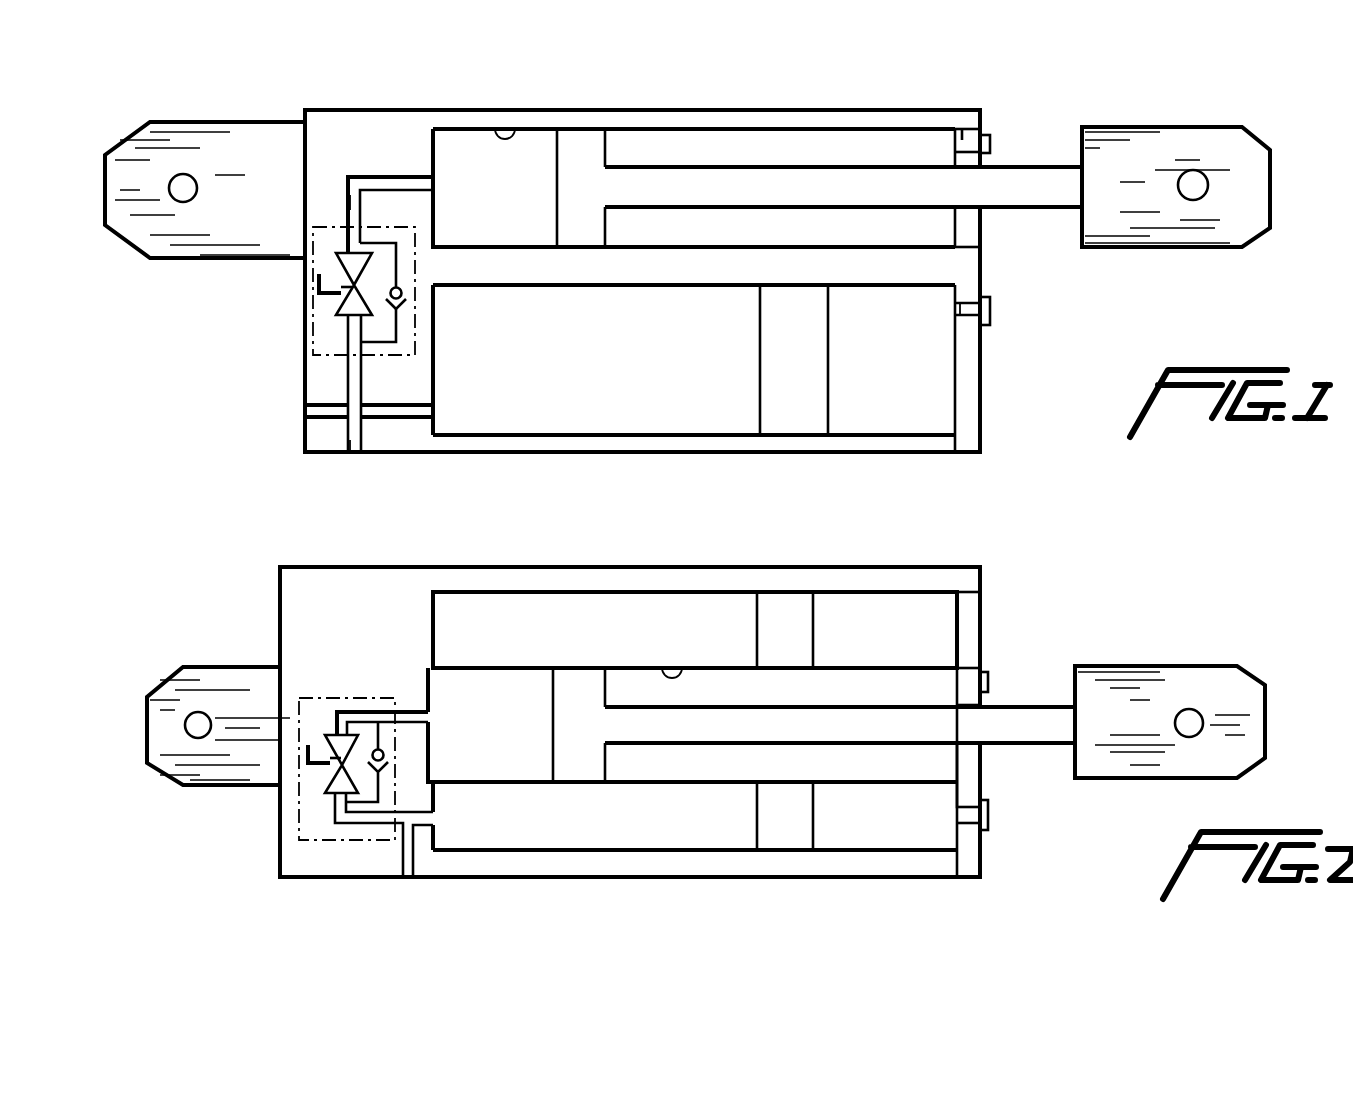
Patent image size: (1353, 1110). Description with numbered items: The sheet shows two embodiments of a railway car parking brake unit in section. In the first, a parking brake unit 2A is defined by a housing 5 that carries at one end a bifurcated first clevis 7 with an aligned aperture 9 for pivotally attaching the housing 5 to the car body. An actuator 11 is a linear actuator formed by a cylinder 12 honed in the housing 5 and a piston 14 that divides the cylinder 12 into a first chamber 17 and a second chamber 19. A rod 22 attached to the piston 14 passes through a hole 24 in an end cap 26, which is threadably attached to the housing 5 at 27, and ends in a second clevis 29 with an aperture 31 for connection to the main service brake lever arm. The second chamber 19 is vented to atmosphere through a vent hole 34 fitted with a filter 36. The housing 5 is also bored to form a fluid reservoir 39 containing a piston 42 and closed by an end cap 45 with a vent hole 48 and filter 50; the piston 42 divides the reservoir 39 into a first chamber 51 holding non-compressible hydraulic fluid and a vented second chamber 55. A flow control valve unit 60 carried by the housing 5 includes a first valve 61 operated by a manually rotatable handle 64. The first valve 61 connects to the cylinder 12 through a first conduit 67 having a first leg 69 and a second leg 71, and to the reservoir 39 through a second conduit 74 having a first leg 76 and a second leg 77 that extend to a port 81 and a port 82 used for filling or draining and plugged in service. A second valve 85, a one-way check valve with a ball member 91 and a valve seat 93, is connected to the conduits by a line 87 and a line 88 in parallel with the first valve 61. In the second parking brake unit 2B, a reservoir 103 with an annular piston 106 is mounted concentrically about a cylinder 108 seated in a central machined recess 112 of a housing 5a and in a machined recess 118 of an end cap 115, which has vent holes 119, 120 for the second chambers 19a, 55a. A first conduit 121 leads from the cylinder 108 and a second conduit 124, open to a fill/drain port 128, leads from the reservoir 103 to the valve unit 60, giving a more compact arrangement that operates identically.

In FIG. 1, the parking brake unit 2A is at (1020, 98).
In FIG. 2, the parking brake unit 2B is at (1002, 557).
In FIG. 1, the housing 5 is at (402, 110).
In FIG. 2, the housing 5a is at (377, 562).
In FIG. 1, the first clevis 7 is at (123, 232).
In FIG. 1, the aligned aperture 9 is at (183, 198).
In FIG. 1, the actuator 11 is at (728, 127).
In FIG. 1, the cylinder 12 is at (505, 128).
In FIG. 1, the piston 14 is at (603, 135).
In FIG. 1, the first chamber 17 is at (694, 188).
In FIG. 1, the second chamber 19 is at (810, 225).
In FIG. 1, the rod 22 is at (850, 175).
In FIG. 2, the rod 22 is at (667, 732).
In FIG. 1, the hole 24 is at (990, 162).
In FIG. 1, the end cap 26 is at (972, 222).
In FIG. 1, the threaded attachment 27 is at (985, 130).
In FIG. 1, the second clevis 29 is at (1250, 232).
In FIG. 1, the aperture 31 is at (1197, 178).
In FIG. 1, the vent hole 34 is at (957, 140).
In FIG. 1, the filter 36 is at (990, 140).
In FIG. 1, the fluid reservoir 39 is at (604, 432).
In FIG. 1, the piston 42 is at (777, 362).
In FIG. 1, the end cap 45 is at (972, 425).
In FIG. 1, the vent hole 48 is at (963, 313).
In FIG. 1, the filter 50 is at (990, 305).
In FIG. 1, the first chamber 51 is at (565, 348).
In FIG. 1, the second chamber 55 is at (898, 352).
In FIG. 1, the flow control valve unit 60 is at (303, 335).
In FIG. 2, the flow control valve unit 60 is at (295, 822).
In FIG. 1, the first valve 61 is at (342, 311).
In FIG. 1, the manually rotatable handle 64 is at (330, 270).
In FIG. 1, the first conduit 67 is at (348, 175).
In FIG. 1, the first leg 69 is at (352, 202).
In FIG. 1, the second leg 71 is at (375, 183).
In FIG. 1, the second conduit 74 is at (345, 395).
In FIG. 1, the first leg 76 is at (362, 375).
In FIG. 1, the second leg 77 is at (395, 414).
In FIG. 1, the port 81 is at (353, 452).
In FIG. 1, the port 82 is at (303, 407).
In FIG. 1, the second valve 85 is at (408, 290).
In FIG. 1, the line 87 is at (380, 243).
In FIG. 1, the line 88 is at (400, 330).
In FIG. 1, the ball member 91 is at (403, 288).
In FIG. 1, the valve seat 93 is at (405, 300).
In FIG. 2, the reservoir 103 is at (652, 590).
In FIG. 2, the annular piston 106 is at (800, 632).
In FIG. 2, the cylinder 108 is at (674, 666).
In FIG. 2, the central machined recess 112 is at (428, 668).
In FIG. 2, the end cap 115 is at (985, 625).
In FIG. 2, the machined recess 118 is at (985, 770).
In FIG. 2, the vent hole 119 is at (990, 672).
In FIG. 2, the vent hole 120 is at (985, 838).
In FIG. 2, the first conduit 121 is at (403, 710).
In FIG. 2, the second conduit 124 is at (373, 818).
In FIG. 2, the fill/drain port 128 is at (413, 877).
In FIG. 2, the second chamber 19a is at (820, 765).
In FIG. 2, the second chamber 55a is at (695, 772).